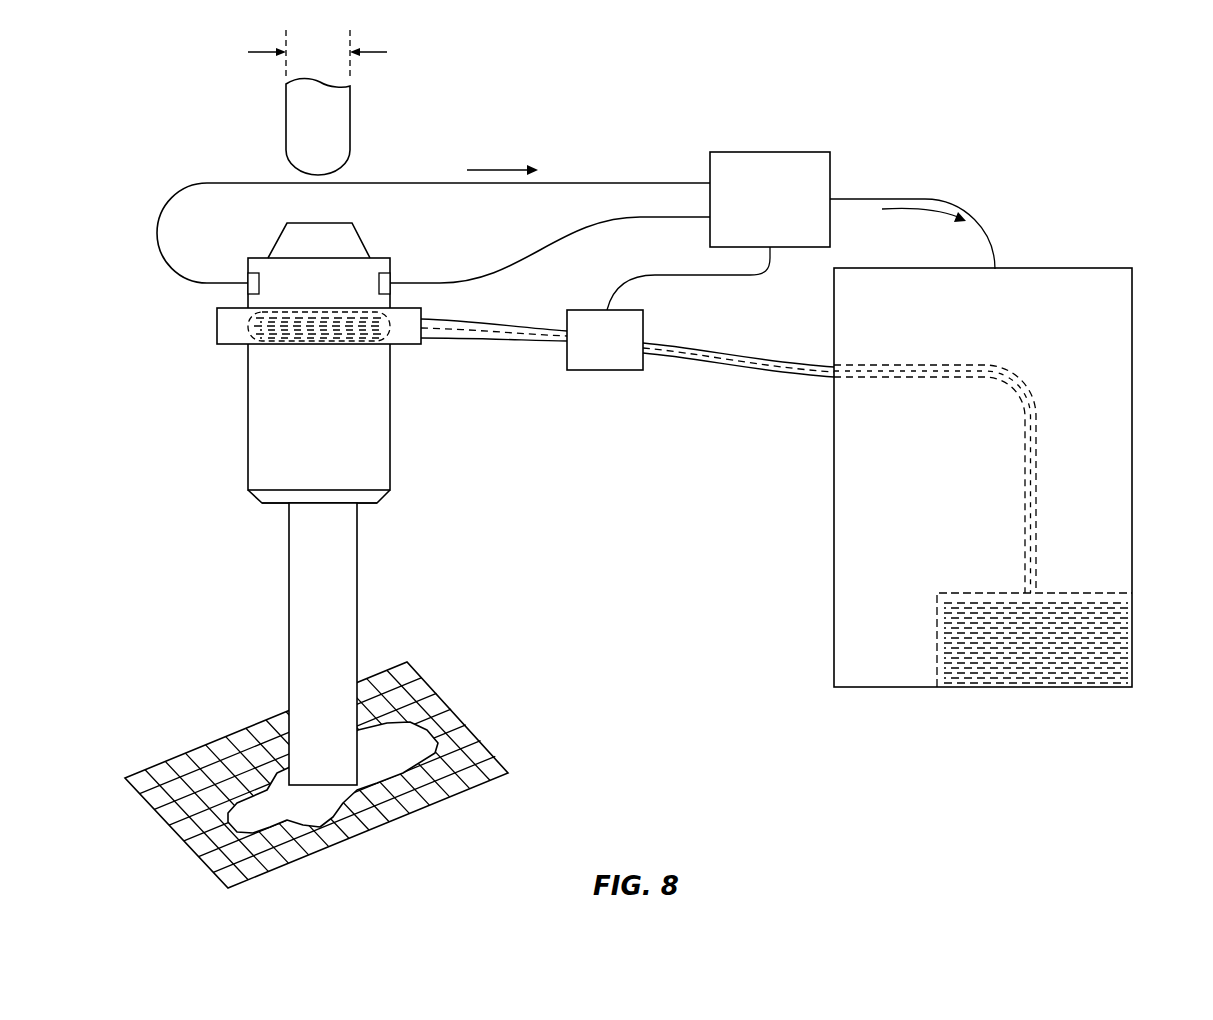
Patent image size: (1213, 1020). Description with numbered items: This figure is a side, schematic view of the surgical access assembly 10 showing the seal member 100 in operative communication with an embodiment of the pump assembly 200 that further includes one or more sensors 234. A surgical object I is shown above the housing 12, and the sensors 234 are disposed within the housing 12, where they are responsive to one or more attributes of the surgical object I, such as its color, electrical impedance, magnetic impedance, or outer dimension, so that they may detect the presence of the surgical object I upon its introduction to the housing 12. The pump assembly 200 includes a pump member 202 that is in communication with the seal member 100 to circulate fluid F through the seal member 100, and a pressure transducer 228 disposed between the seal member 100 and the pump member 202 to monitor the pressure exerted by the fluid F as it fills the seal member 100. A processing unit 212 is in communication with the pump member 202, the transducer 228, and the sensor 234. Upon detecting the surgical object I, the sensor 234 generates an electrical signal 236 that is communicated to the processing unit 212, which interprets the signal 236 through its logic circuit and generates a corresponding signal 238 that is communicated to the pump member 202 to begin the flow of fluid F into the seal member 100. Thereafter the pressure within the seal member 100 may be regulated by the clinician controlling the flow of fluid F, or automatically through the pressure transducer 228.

The surgical access assembly 10 is at (160, 158).
The surgical object I is at (350, 118).
The housing 12 is at (400, 295).
The sensors 234 is at (248, 276).
The seal member 100 is at (370, 362).
The fluid F is at (286, 338).
The processing unit 212 is at (770, 152).
The electrical signal 236 is at (502, 158).
The signal 238 is at (924, 225).
The pressure transducer 228 is at (583, 310).
The pump assembly 200 is at (778, 620).
The pump member 202 is at (1133, 415).